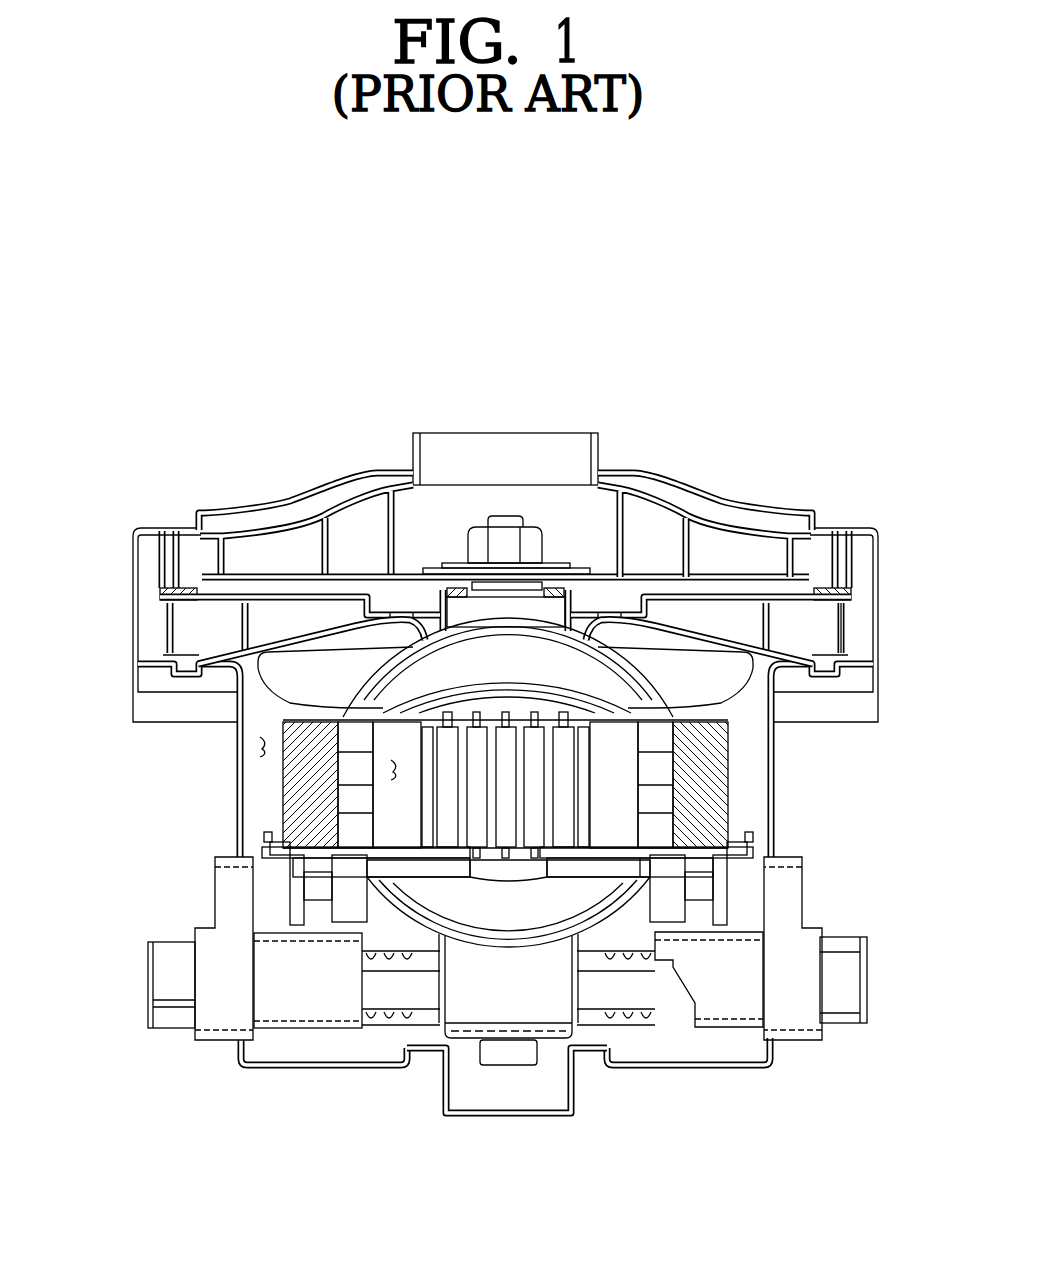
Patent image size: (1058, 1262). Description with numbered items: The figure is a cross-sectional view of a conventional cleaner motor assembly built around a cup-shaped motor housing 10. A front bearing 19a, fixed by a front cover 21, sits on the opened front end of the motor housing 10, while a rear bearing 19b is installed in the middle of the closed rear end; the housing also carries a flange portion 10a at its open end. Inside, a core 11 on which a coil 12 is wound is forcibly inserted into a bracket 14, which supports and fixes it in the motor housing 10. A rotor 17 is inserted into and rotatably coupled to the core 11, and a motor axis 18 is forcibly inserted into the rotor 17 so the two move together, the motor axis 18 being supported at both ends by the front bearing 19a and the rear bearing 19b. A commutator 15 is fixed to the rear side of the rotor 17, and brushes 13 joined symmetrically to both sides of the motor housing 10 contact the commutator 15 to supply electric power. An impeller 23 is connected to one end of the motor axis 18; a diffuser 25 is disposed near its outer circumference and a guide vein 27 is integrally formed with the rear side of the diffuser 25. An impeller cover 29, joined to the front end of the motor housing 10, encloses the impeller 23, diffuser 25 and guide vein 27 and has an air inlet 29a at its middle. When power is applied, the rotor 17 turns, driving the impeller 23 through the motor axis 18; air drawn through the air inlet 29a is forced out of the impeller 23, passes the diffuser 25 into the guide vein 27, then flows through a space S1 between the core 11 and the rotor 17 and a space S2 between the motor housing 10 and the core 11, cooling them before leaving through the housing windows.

The motor housing 10 is at (240, 783).
The housing flange 10a is at (130, 655).
The core 11 is at (720, 743).
The coil 12 is at (370, 893).
The brushes 13 is at (390, 998).
The bracket 14 is at (750, 855).
The commutator 15 is at (563, 992).
The rotor 17 is at (557, 793).
The motor axis 18 is at (510, 522).
The front bearing 19a is at (553, 610).
The rear bearing 19b is at (484, 1097).
The front cover 21 is at (815, 616).
The impeller 23 is at (738, 508).
The diffuser 25 is at (852, 547).
The guide vein 27 is at (817, 633).
The impeller cover 29 is at (296, 490).
The air inlet 29a is at (494, 442).
The space S1 is at (360, 803).
The space S2 is at (260, 742).